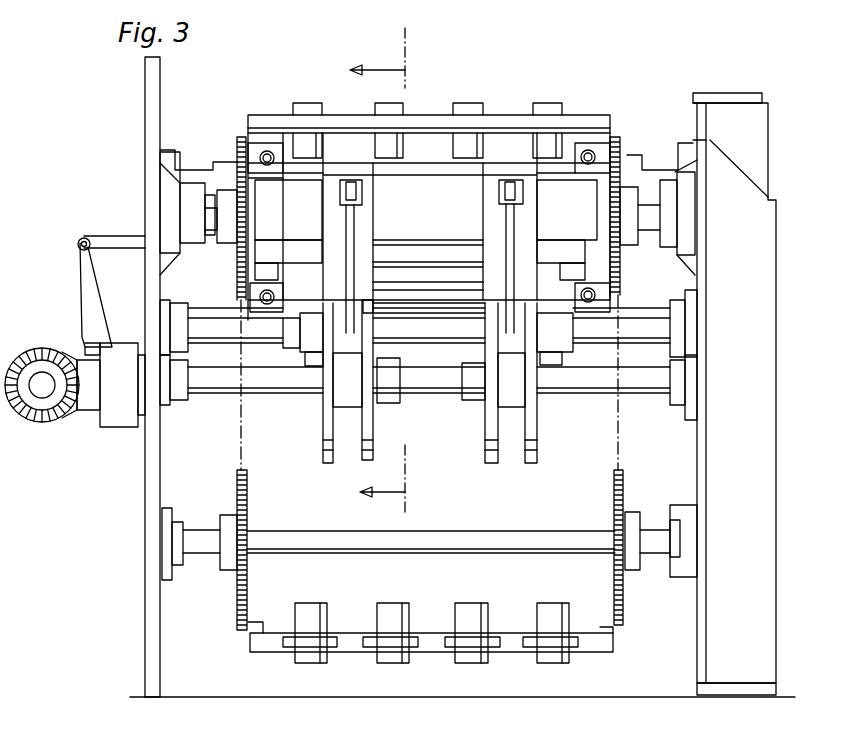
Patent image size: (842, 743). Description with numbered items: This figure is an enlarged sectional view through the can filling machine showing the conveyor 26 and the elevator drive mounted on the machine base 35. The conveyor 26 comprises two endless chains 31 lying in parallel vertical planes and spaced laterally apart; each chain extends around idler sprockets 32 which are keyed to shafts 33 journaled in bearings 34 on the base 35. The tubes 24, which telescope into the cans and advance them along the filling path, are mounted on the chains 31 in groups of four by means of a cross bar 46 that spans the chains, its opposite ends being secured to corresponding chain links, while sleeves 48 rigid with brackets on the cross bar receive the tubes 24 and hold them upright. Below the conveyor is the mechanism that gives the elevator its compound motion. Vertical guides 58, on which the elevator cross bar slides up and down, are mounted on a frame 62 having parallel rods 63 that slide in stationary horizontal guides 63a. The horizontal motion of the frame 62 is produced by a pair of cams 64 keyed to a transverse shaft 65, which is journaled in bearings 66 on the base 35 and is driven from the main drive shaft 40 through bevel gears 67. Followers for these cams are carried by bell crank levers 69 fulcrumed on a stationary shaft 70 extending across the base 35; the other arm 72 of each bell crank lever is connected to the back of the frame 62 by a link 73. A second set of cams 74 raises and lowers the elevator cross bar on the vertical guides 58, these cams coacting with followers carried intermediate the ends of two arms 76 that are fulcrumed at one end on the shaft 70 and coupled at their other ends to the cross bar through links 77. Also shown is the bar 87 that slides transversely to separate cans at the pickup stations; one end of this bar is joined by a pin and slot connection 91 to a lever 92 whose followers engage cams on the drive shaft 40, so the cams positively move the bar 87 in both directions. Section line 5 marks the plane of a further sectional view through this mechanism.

The section line 5- 5 is at (390, 271).
The tube 24 is at (308, 112).
The conveyor 26 is at (264, 659).
The endless chains 31 is at (237, 625).
The idler sprockets 32 is at (237, 285).
The shafts 33 is at (212, 232).
The bearings 34 is at (178, 250).
The base 35 is at (145, 622).
The drive shaft 40 is at (42, 378).
The cross bar 46 is at (590, 115).
The sleeves 48 is at (292, 648).
The vertical guides 58 is at (270, 220).
The frame 62 is at (357, 172).
The rods 63 is at (260, 157).
The horizontal guides 63a is at (275, 172).
The cams 64 is at (368, 462).
The transverse shaft 65 is at (226, 383).
The bearings 66 is at (178, 405).
The bevel gears 67 is at (63, 418).
The bell crank levers 69 is at (374, 303).
The stationary shaft 70 is at (455, 318).
The arm 72 is at (355, 243).
The link 73 is at (360, 200).
The cams 74 is at (326, 452).
The arms 76 is at (308, 365).
The links 77 is at (292, 346).
The bar 87 is at (137, 238).
The pin and slot connection 91 is at (75, 256).
The lever 92 is at (80, 290).